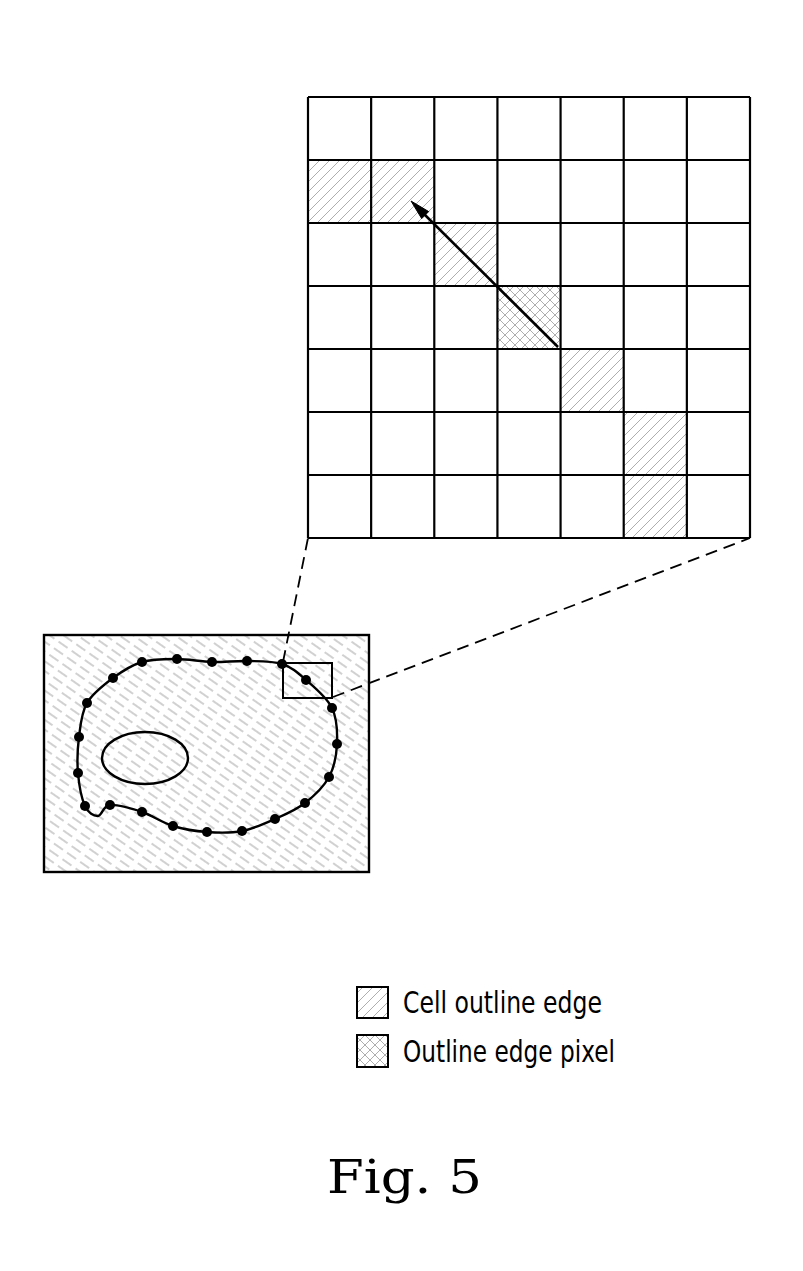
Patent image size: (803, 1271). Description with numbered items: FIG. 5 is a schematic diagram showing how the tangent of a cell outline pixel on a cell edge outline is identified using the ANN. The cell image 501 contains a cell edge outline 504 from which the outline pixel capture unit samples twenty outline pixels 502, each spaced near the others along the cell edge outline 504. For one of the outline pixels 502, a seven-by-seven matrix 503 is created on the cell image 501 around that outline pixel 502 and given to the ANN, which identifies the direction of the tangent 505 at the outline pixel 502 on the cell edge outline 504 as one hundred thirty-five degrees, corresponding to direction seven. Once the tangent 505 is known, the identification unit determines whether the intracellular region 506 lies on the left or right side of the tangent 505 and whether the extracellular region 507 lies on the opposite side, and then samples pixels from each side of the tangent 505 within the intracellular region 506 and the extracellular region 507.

The cell image 501 is at (261, 708).
The outline pixel 502 is at (308, 670).
The 7×7 matrix 503 is at (334, 682).
The cell edge outline 504 is at (188, 830).
The tangent 505 is at (455, 238).
The intracellular region 506 is at (135, 695).
The extracellular region 507 is at (348, 832).